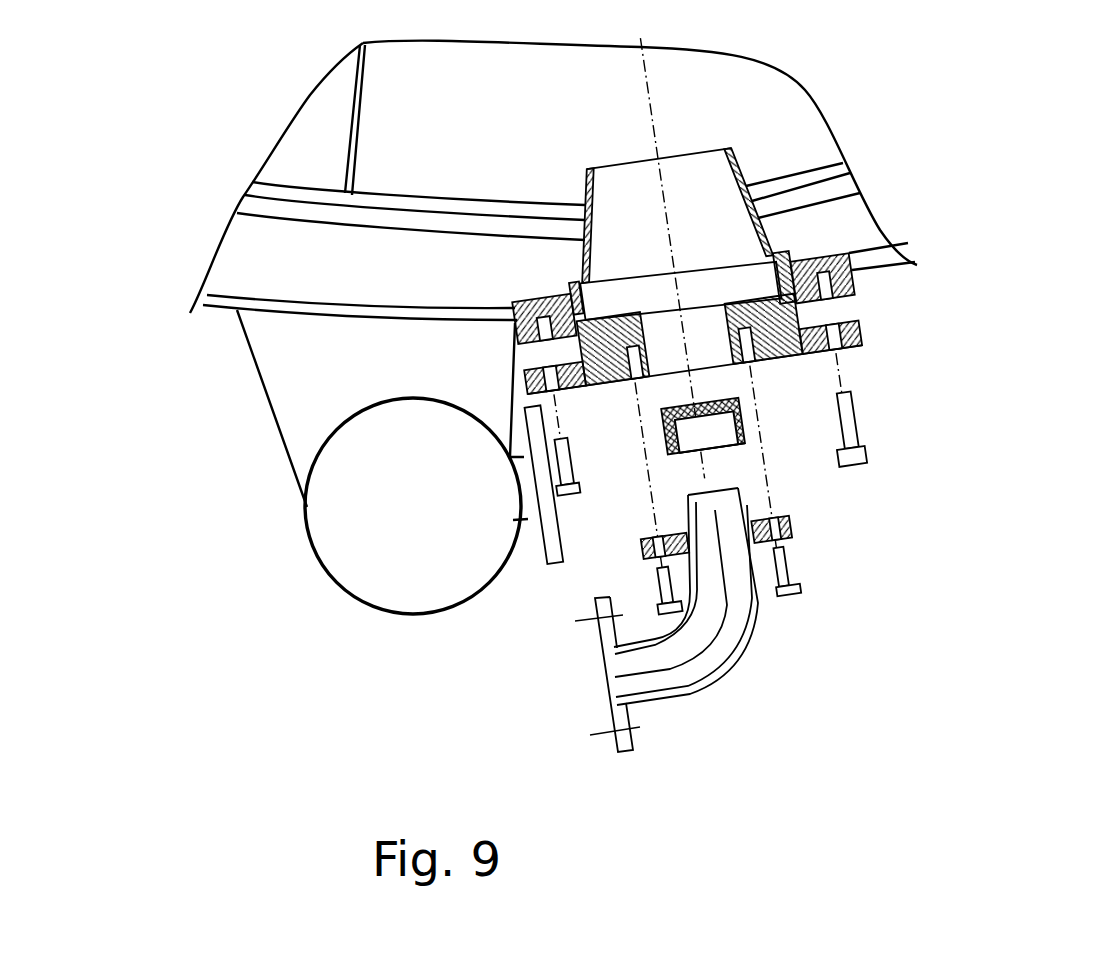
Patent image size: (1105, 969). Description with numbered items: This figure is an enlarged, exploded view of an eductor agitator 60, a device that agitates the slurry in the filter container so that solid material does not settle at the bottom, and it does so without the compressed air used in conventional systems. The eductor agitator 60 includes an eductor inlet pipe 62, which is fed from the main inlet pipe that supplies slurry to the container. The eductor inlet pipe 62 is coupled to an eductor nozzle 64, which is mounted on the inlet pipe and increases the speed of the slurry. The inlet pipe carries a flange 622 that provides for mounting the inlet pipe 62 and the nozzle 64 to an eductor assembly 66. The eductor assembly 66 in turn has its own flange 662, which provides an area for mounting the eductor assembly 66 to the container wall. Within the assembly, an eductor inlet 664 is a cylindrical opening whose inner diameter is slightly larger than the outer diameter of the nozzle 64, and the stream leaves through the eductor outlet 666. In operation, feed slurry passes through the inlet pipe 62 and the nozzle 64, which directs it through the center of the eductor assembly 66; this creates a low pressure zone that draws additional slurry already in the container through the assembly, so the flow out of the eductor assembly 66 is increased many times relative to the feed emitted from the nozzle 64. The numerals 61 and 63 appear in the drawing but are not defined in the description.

The eductor agitator 60 is at (962, 375).
The outlet opening 61 is at (687, 453).
The eductor inlet pipe 62 is at (733, 677).
The flange 622 is at (790, 528).
The sealing ring 63 is at (713, 388).
The eductor nozzle 64 is at (744, 444).
The eductor assembly 66 is at (790, 244).
The flange 662 is at (857, 327).
The eductor inlet 664 is at (650, 372).
The eductor outlet 666 is at (741, 160).